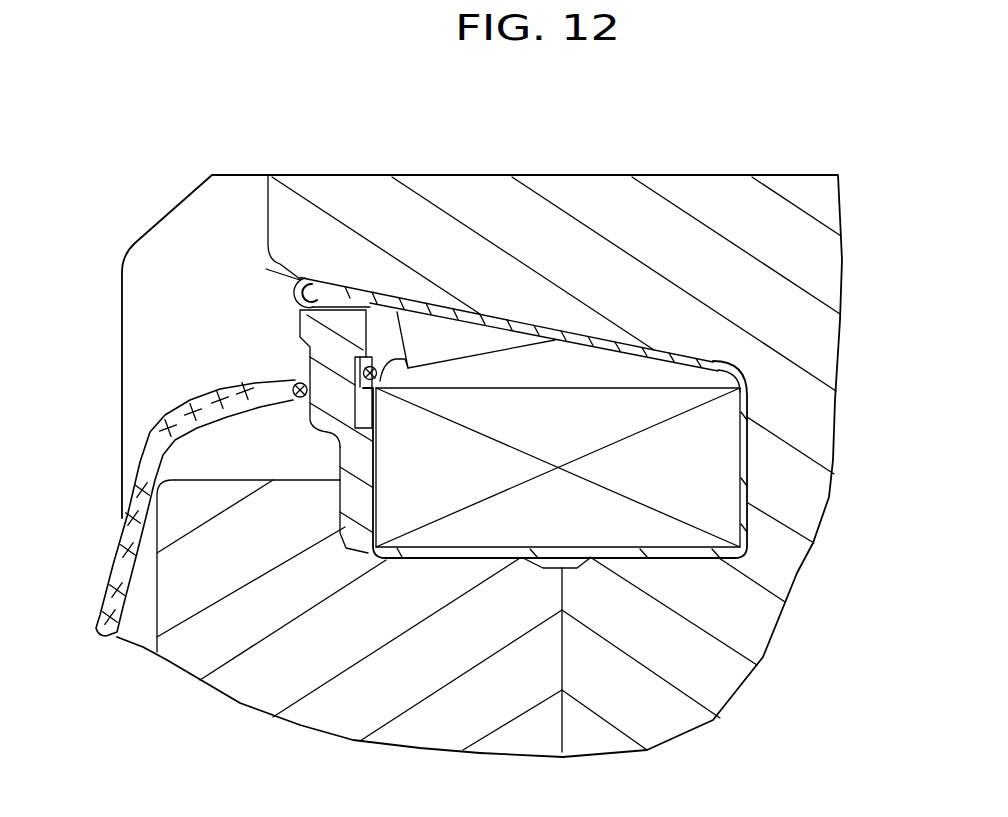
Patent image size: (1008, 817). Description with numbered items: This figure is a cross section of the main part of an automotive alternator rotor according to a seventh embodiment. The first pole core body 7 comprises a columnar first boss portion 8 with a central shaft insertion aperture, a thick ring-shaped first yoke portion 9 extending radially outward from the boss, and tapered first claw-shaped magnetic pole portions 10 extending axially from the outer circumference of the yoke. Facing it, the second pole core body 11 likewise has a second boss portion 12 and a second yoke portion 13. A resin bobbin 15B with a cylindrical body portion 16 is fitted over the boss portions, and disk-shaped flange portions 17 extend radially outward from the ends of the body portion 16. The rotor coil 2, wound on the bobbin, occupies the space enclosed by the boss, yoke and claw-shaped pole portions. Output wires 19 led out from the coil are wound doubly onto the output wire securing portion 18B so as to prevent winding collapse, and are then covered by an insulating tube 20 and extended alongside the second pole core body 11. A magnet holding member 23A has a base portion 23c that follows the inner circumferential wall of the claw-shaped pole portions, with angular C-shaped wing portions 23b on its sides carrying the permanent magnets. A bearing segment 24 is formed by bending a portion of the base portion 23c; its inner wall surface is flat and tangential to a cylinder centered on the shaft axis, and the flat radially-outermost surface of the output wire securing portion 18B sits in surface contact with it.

The rotor coil 2 is at (633, 467).
The first pole core body 7 is at (555, 466).
The first boss portion 8 is at (598, 654).
The first yoke portion 9 is at (805, 509).
The first claw-shaped magnetic pole portion 10 is at (553, 242).
The second pole core body 11 is at (147, 346).
The second boss portion 12 is at (322, 622).
The second yoke portion 13 is at (192, 566).
The bobbin 15B is at (637, 459).
The body portion 16 is at (298, 695).
The flange portion 17 is at (208, 455).
The output wire securing portion 18B is at (204, 373).
The output wire 19 is at (209, 368).
The insulating tube 20 is at (168, 507).
The magnet holding member 23A is at (509, 232).
The wing portion 23b is at (467, 237).
The base portion 23c is at (617, 230).
The bearing segment 24 is at (341, 200).